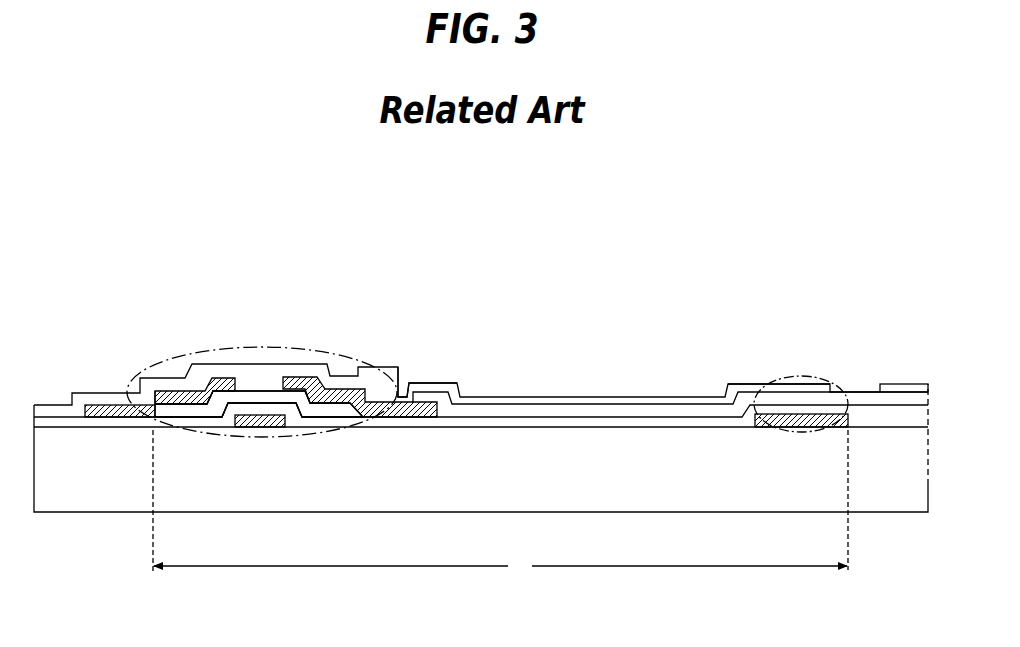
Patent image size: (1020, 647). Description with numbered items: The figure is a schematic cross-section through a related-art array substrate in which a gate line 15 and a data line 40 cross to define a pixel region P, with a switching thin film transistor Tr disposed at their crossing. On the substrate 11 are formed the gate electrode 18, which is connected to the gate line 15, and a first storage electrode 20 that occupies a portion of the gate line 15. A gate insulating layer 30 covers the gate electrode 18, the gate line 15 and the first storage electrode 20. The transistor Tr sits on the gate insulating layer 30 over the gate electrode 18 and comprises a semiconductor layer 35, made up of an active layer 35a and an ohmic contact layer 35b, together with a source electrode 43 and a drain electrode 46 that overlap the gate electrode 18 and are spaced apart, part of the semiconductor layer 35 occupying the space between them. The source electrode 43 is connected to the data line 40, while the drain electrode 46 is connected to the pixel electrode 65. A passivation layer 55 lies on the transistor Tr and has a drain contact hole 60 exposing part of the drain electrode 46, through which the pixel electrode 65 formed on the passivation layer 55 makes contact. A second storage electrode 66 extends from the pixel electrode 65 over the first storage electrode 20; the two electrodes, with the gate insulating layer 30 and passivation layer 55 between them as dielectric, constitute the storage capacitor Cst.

The substrate 11 is at (921, 495).
The gate line 15 is at (845, 404).
The gate electrode 18 is at (263, 428).
The first storage electrode 20 is at (797, 426).
The gate insulating layer 30 is at (469, 422).
The semiconductor layer 35 is at (170, 479).
The active layer 35a is at (174, 412).
The ohmic contact layer 35b is at (199, 406).
The data line 40 is at (103, 412).
The source electrode 43 is at (216, 409).
The drain electrode 46 is at (293, 387).
The passivation layer 55 is at (523, 408).
The drain contact hole 60 is at (403, 377).
The pixel electrode 65 is at (596, 397).
The second storage electrode 66 is at (762, 384).
The storage capacitor Cst is at (818, 380).
The thin film transistor Tr is at (321, 437).
The pixel region P is at (500, 503).